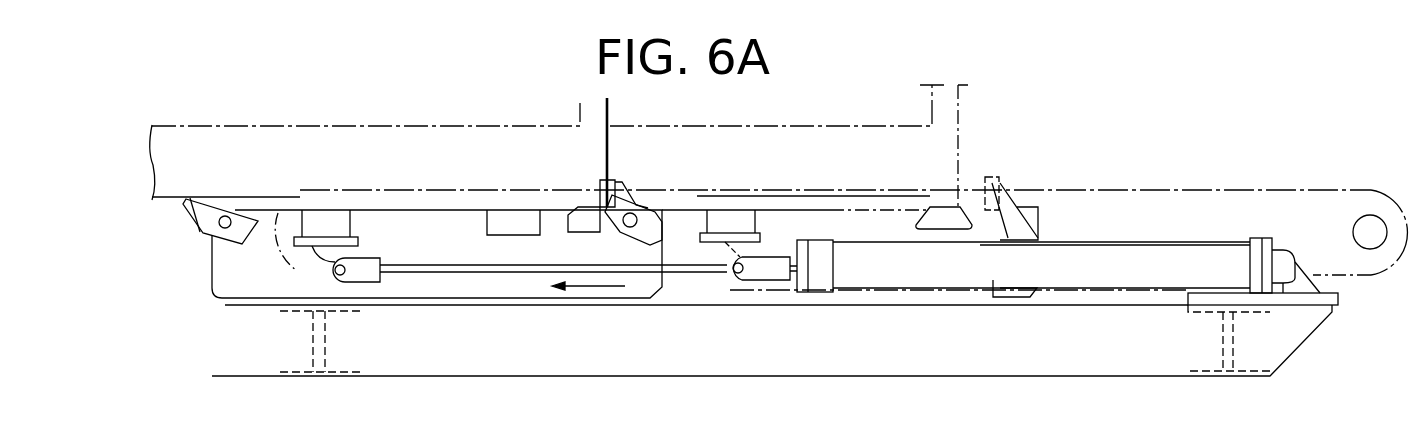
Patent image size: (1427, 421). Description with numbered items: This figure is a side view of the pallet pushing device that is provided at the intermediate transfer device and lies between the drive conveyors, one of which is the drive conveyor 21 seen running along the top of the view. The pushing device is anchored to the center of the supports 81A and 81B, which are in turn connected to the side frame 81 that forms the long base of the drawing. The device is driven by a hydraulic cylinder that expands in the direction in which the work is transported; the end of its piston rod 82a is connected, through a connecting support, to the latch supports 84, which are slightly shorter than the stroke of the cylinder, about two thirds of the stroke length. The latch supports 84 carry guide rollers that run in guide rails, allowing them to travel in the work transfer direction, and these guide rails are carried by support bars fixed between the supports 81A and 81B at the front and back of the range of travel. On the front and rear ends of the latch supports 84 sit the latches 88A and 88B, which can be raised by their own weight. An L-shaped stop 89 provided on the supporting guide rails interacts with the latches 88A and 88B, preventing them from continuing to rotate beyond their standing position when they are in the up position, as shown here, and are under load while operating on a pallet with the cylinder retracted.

The drive conveyor 21 is at (278, 220).
The side frame 81 is at (1132, 375).
The support 81A is at (1215, 345).
The support 81B is at (322, 340).
The piston rod 82a is at (367, 262).
The latch support 84 is at (637, 297).
The latch 88A is at (605, 200).
The latch 88B is at (203, 197).
The L-shaped stop 89 is at (990, 295).